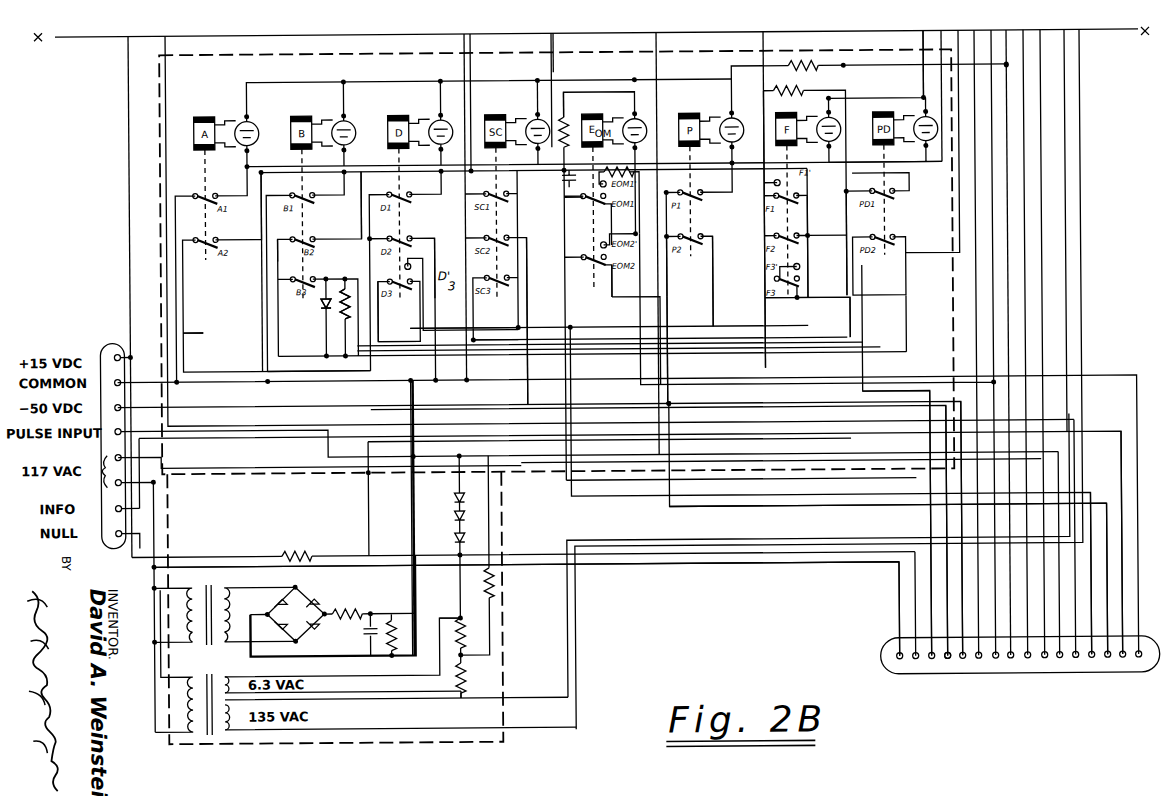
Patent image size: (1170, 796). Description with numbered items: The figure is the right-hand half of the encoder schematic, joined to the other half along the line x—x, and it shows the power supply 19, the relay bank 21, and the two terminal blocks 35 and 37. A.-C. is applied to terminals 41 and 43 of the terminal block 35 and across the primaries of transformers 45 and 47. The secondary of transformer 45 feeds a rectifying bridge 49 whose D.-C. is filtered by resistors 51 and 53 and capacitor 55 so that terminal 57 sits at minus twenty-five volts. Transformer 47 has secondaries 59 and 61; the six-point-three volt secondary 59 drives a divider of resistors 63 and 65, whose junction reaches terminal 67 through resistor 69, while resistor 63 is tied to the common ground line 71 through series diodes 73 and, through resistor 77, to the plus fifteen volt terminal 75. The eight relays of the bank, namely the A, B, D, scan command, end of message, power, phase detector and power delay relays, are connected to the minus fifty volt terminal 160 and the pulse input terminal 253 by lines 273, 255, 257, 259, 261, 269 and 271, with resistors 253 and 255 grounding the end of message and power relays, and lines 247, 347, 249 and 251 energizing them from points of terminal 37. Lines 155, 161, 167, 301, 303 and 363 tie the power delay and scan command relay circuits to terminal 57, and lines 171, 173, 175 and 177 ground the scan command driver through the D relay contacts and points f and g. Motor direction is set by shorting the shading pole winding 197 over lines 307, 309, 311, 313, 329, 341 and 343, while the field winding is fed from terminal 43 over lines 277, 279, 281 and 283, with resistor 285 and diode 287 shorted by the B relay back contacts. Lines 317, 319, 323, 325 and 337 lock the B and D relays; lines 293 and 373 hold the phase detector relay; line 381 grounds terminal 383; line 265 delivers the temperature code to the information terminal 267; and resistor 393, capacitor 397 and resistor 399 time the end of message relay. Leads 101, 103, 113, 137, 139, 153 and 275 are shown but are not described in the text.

The power supply 19 is at (348, 754).
The relay bank 21 is at (158, 222).
The terminal block 35 is at (112, 332).
The second terminal block 37 is at (1135, 684).
The terminal 41 is at (117, 459).
The terminal 43 is at (115, 482).
The transformer 45 is at (219, 581).
The transformer 47 is at (215, 671).
The rectifying bridge 49 is at (307, 585).
The resistor 51 is at (352, 610).
The resistor 53 is at (392, 622).
The capacitor 55 is at (360, 636).
The terminal 57 is at (366, 476).
The secondary 59 is at (236, 674).
The secondary 61 is at (232, 732).
The resistor 63 is at (470, 640).
The resistor 65 is at (460, 684).
The terminal 67 is at (460, 494).
The resistor 69 is at (480, 604).
The common ground line 71 is at (1020, 54).
The series diodes 73 is at (448, 532).
The terminal 75 is at (130, 356).
The resistor 77 is at (294, 556).
The conductor 101 is at (1068, 90).
The conductor 103 is at (1082, 64).
The dashed enclosure line 113 is at (170, 50).
The conductor 137 is at (130, 153).
The conductor 139 is at (660, 46).
The conductor 153 is at (940, 166).
The line 155 is at (840, 230).
The terminal 160 is at (117, 407).
The line 161 is at (940, 46).
The line 167 is at (543, 86).
The line 171 is at (970, 274).
The line 173 is at (436, 246).
The line 175 is at (368, 260).
The line 177 is at (972, 254).
The shading pole winding 197 is at (947, 662).
The line 247 is at (888, 460).
The line 249 is at (692, 318).
The line 251 is at (632, 306).
The pulse input terminal 253 is at (784, 100).
The line 255 is at (826, 40).
The line 257 is at (556, 296).
The line 259 is at (872, 516).
The line 261 is at (322, 404).
The line 265 is at (1111, 430).
The information terminal 267 is at (116, 512).
The line 269 is at (672, 268).
The line 271 is at (712, 284).
The line 273 is at (786, 40).
The conductor 275 is at (286, 152).
The line 277 is at (306, 486).
The line 279 is at (856, 282).
The line 281 is at (392, 350).
The line 283 is at (200, 566).
The resistor 285 is at (342, 330).
The diode 287 is at (320, 312).
The line 293 is at (466, 55).
The line 301 is at (920, 38).
The line 303 is at (886, 102).
The line 307 is at (770, 374).
The line 309 is at (842, 272).
The line 311 is at (406, 314).
The line 313 is at (520, 320).
The line 317 is at (820, 202).
The line 319 is at (716, 276).
The line 323 is at (207, 332).
The line 325 is at (262, 336).
The line 329 is at (842, 366).
The line 337 is at (362, 220).
The line 341 is at (540, 334).
The line 343 is at (578, 342).
The line 347 is at (564, 196).
The line 363 is at (560, 44).
The line 373 is at (478, 50).
The line 381 is at (528, 244).
The terminal 383 is at (119, 551).
The resistor 393 is at (628, 166).
The capacitor 397 is at (562, 184).
The resistor 399 is at (568, 121).